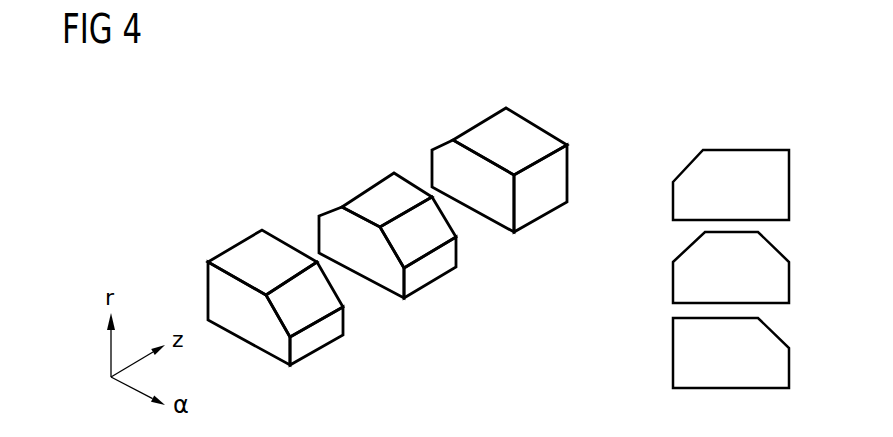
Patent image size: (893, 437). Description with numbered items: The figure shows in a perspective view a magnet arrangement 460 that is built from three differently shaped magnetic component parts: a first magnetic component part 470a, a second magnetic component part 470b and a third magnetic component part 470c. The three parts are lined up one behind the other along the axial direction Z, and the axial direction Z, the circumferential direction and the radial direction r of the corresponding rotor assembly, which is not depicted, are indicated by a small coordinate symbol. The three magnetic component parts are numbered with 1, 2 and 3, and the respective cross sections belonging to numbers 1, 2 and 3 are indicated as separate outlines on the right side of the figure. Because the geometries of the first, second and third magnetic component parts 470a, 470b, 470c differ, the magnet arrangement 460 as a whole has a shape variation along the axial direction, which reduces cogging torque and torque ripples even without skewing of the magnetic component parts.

The magnet arrangement 460 is at (331, 107).
The first magnetic component part 470a is at (525, 113).
The second magnetic component part 470b is at (355, 197).
The third magnetic component part 470c is at (235, 245).
The first magnetic component part number 1 is at (731, 185).
The second magnetic component part number 2 is at (731, 267).
The third magnetic component part number 3 is at (731, 353).